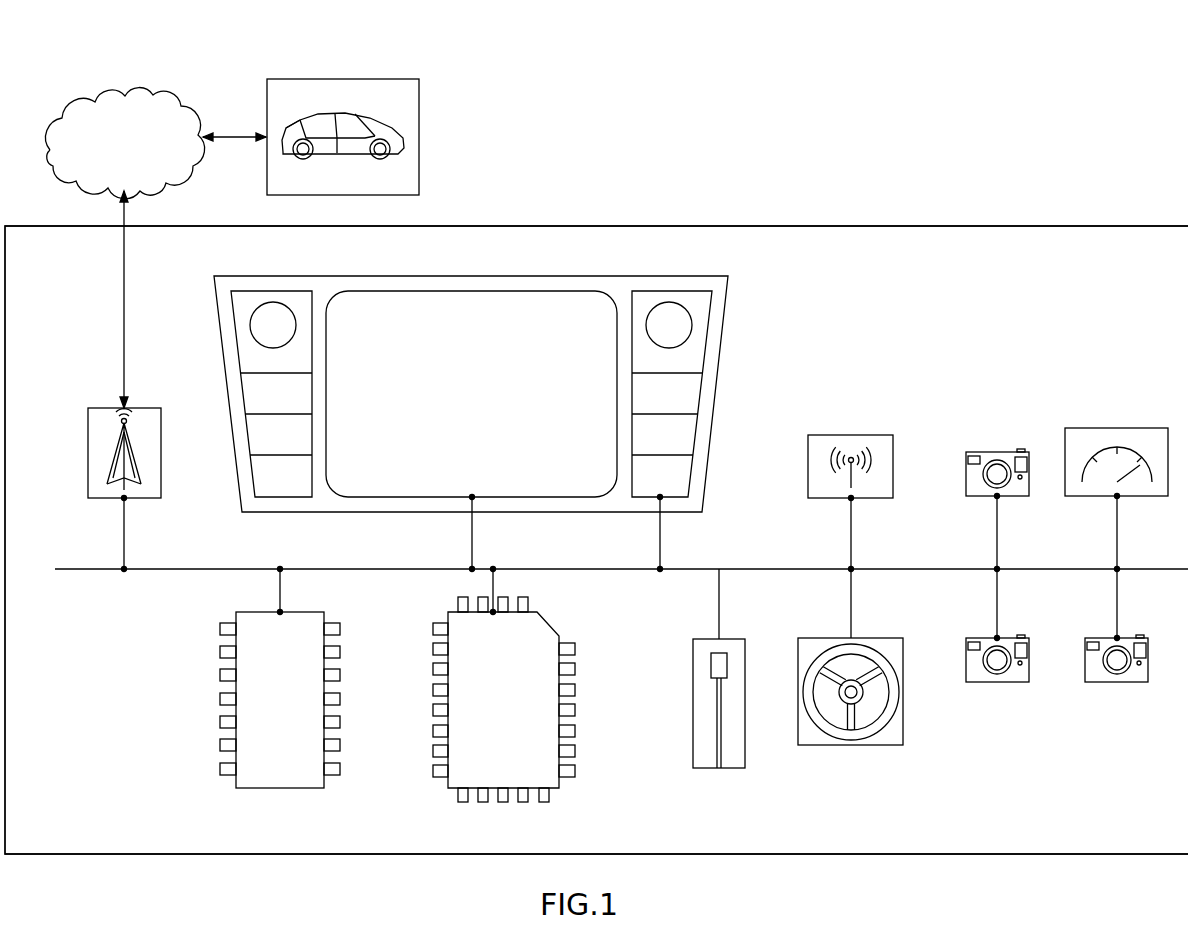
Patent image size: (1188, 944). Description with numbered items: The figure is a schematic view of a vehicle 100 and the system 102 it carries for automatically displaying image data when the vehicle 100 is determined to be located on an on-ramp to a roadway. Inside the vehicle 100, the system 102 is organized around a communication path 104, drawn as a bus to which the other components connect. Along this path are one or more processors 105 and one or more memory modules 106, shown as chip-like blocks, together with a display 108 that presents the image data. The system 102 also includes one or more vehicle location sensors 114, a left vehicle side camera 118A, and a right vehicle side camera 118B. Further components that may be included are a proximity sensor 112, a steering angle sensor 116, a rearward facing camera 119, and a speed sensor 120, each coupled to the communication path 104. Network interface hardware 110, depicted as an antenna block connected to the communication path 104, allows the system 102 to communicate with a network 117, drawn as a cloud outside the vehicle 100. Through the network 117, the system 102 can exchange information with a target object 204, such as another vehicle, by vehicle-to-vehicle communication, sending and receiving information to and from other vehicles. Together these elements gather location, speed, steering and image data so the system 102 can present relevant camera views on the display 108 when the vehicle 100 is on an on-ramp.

The vehicle 100 is at (1084, 225).
The system 102 is at (978, 273).
The communication path 104 is at (183, 571).
The processors 105 is at (448, 790).
The memory modules 106 is at (278, 789).
The display 108 is at (458, 302).
The network interface hardware 110 is at (88, 414).
The proximity sensor 112 is at (845, 434).
The vehicle location sensors 114 is at (719, 769).
The steering angle sensor 116 is at (851, 746).
The network 117 is at (112, 96).
The left vehicle side camera 118A is at (997, 451).
The right vehicle side camera 118B is at (997, 683).
The rearward facing camera 119 is at (1117, 683).
The speed sensor 120 is at (1118, 427).
The target object 204 is at (419, 137).